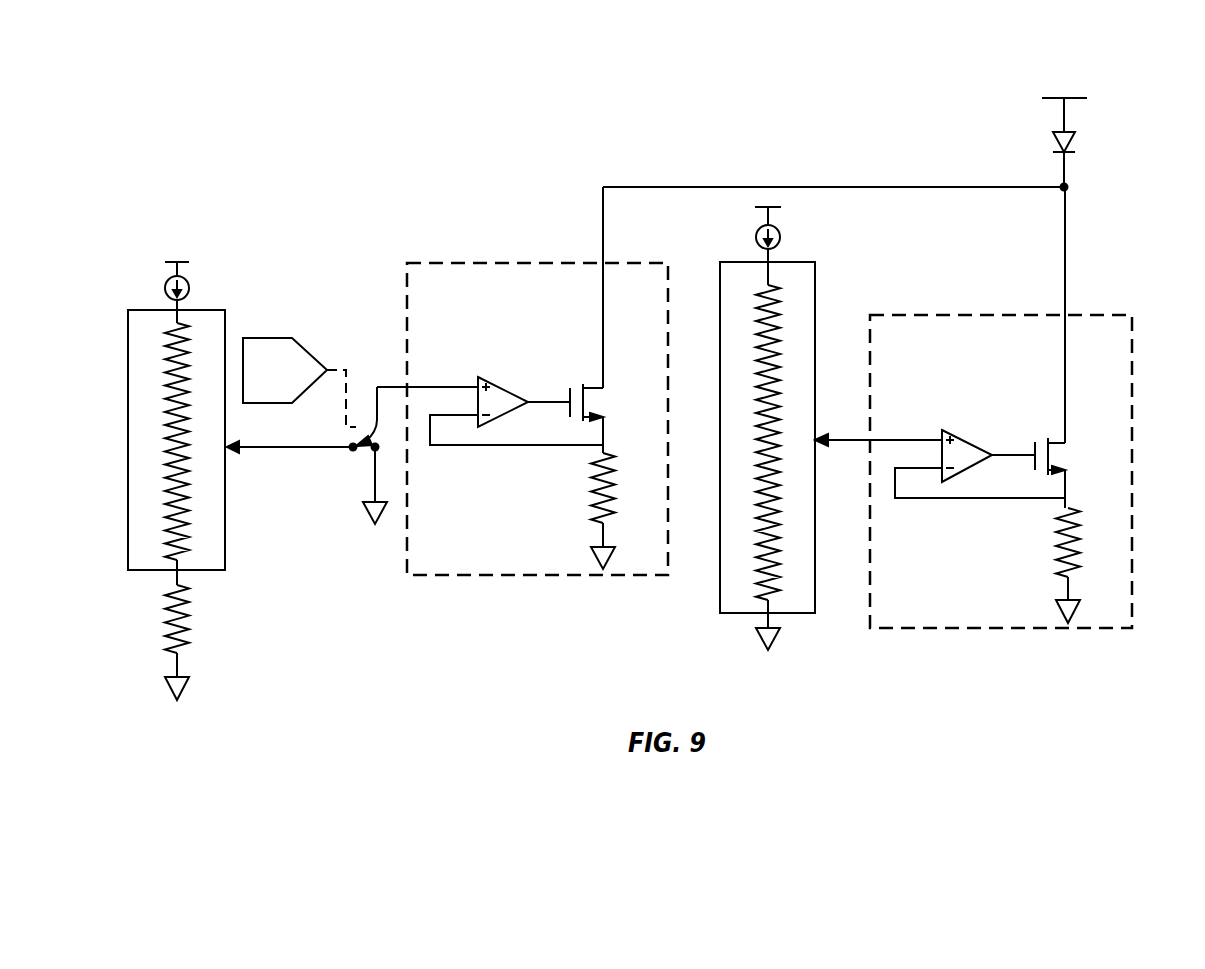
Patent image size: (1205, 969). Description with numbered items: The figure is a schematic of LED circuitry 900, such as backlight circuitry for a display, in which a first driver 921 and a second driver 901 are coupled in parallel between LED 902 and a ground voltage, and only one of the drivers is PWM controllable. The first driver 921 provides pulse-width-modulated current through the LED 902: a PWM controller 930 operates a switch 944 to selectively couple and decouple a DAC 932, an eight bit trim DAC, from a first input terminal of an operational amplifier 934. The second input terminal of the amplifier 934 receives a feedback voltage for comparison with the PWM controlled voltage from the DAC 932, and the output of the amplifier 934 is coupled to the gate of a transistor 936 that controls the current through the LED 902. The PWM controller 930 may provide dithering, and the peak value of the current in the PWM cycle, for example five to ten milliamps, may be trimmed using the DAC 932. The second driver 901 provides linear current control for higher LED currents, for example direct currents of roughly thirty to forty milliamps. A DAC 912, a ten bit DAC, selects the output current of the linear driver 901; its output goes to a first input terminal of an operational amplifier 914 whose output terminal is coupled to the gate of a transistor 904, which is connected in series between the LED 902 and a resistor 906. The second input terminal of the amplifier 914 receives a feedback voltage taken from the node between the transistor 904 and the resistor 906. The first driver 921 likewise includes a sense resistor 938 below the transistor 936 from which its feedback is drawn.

The LED circuitry 900 is at (130, 116).
The second driver 901 is at (935, 313).
The LED 902 is at (1084, 128).
The transistor 904 is at (1056, 452).
The resistor 906 is at (1084, 547).
The DAC 912 is at (810, 616).
The operational amplifier 914 is at (975, 438).
The first driver 921 is at (478, 262).
The PWM controller 930 is at (262, 338).
The DAC 932 is at (228, 497).
The operational amplifier 934 is at (508, 383).
The transistor 936 is at (588, 400).
The sense resistor 938 is at (618, 490).
The switch 944 is at (355, 420).